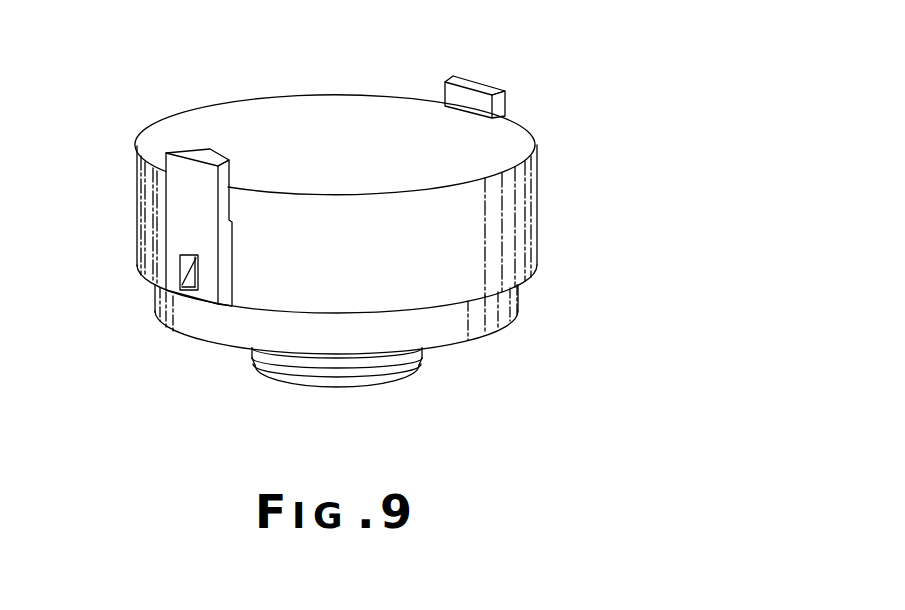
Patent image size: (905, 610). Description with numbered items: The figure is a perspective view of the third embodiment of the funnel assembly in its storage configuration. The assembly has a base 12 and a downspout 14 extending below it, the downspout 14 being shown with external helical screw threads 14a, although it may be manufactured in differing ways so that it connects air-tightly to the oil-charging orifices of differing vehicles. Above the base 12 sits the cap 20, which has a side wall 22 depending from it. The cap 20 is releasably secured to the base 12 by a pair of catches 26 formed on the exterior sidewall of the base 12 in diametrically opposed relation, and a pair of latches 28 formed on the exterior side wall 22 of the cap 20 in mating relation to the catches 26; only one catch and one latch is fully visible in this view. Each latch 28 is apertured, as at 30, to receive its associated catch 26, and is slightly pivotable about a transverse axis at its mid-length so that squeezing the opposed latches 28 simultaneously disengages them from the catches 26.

The base 12 is at (210, 320).
The downspout 14 is at (285, 381).
The external helical screw threads 14a is at (337, 366).
The cap 20 is at (312, 163).
The side wall 22 is at (354, 265).
The catches 26 is at (208, 153).
The latches 28 is at (200, 272).
The aperture 30 is at (182, 276).